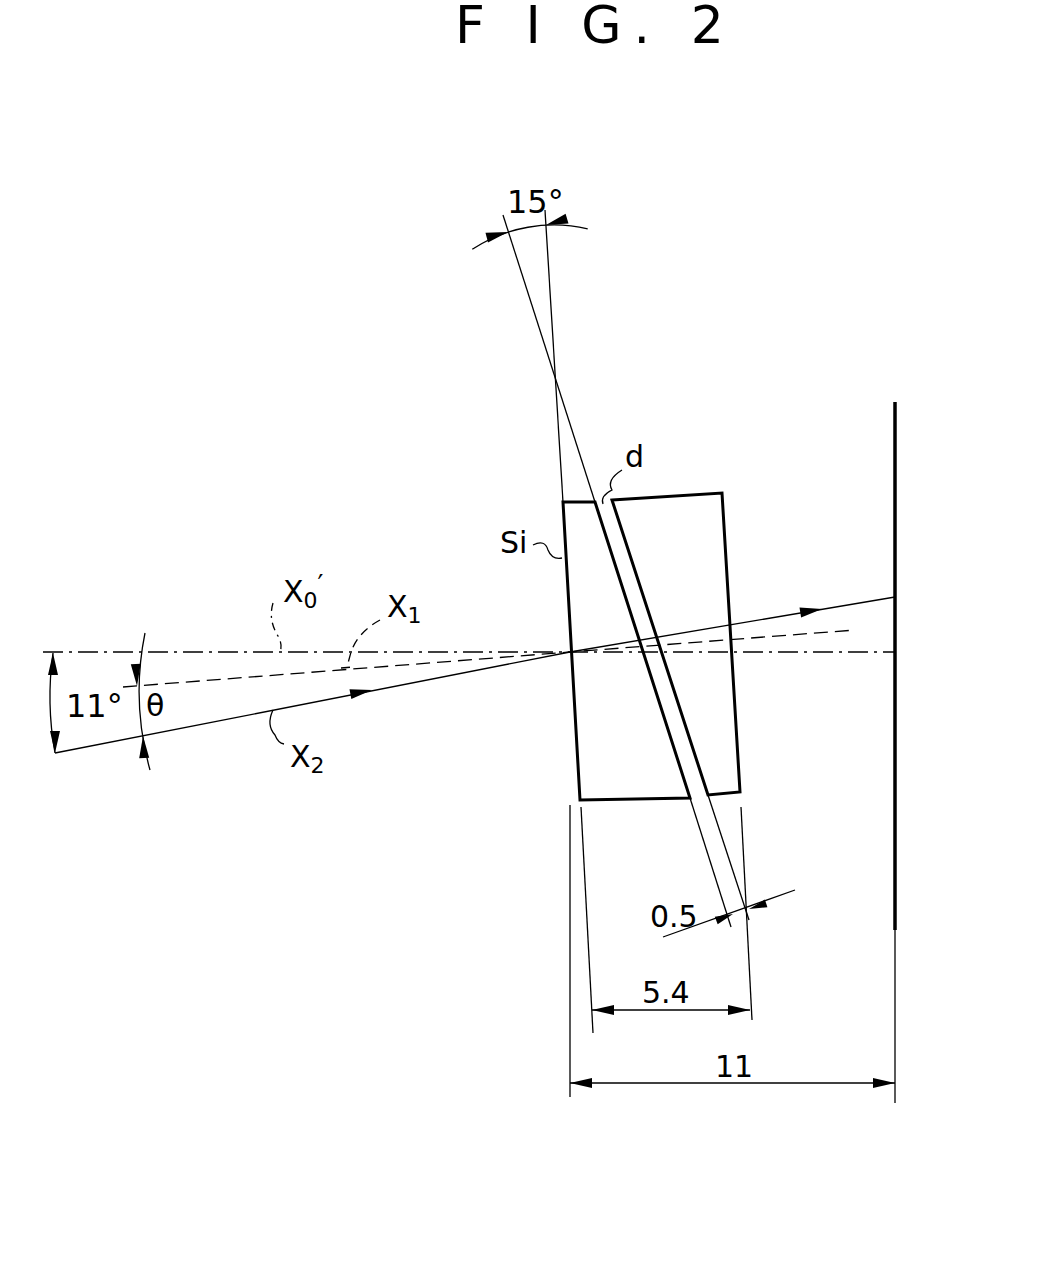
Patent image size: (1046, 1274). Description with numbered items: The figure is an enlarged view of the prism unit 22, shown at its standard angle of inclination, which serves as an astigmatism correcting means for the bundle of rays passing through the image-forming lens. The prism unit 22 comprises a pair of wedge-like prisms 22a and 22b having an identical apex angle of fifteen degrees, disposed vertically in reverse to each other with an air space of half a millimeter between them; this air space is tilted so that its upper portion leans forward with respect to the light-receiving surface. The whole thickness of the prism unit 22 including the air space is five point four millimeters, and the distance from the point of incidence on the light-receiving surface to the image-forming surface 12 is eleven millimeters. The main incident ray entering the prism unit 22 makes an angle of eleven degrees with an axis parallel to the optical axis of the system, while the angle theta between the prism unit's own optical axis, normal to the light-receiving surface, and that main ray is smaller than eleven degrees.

The prism unit 22 is at (758, 390).
The wedge-like prism 22a is at (575, 513).
The wedge-like prism 22b is at (695, 507).
The image-forming surface 12 is at (895, 457).